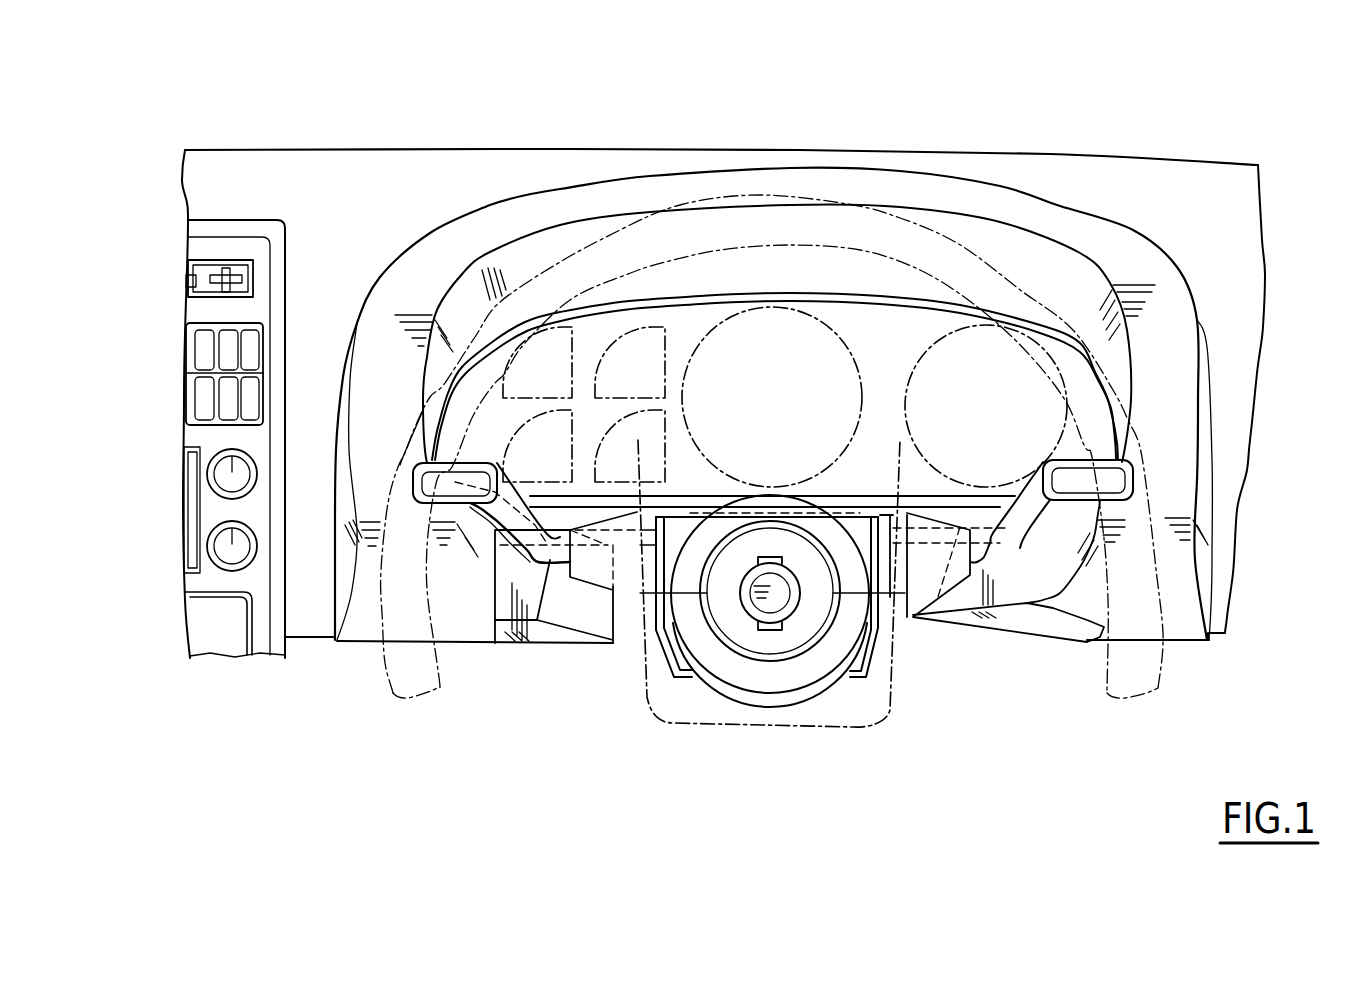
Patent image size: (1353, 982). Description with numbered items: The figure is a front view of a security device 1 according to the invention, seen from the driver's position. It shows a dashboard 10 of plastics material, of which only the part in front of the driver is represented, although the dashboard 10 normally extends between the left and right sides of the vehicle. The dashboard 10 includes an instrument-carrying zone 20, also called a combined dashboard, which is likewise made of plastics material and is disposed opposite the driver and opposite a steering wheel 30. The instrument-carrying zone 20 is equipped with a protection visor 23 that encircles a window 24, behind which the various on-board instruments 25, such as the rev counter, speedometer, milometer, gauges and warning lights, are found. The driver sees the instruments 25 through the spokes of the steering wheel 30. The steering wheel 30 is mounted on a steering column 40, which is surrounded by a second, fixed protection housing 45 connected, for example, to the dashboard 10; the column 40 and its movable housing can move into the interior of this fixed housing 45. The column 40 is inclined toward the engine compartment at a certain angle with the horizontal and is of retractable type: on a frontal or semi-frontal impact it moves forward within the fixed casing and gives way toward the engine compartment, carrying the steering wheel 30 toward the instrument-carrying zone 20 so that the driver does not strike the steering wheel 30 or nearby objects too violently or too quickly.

The security device 1 is at (1252, 130).
The dashboard 10 is at (385, 145).
The instrument-carrying zone 20 is at (1212, 337).
The protection visor 23 is at (548, 207).
The window 24 is at (900, 320).
The on-board instruments 25 is at (905, 378).
The steering wheel 30 is at (1160, 675).
The steering column 40 is at (812, 675).
The fixed protection housing 45 is at (648, 657).